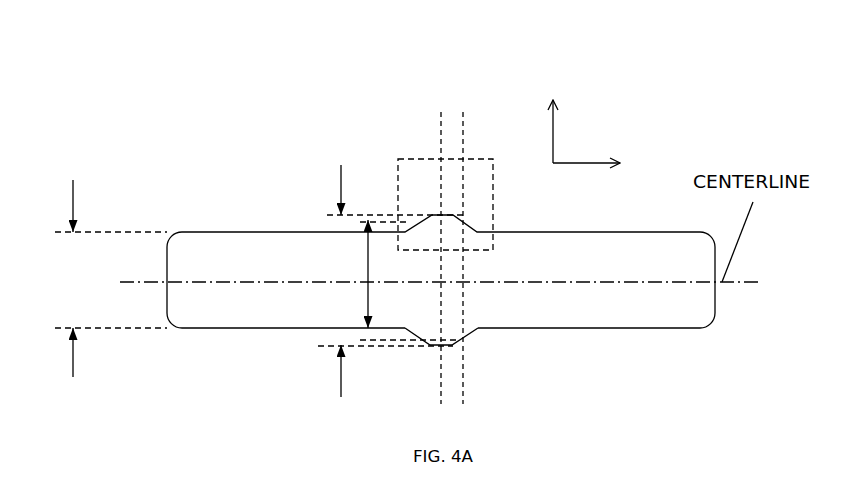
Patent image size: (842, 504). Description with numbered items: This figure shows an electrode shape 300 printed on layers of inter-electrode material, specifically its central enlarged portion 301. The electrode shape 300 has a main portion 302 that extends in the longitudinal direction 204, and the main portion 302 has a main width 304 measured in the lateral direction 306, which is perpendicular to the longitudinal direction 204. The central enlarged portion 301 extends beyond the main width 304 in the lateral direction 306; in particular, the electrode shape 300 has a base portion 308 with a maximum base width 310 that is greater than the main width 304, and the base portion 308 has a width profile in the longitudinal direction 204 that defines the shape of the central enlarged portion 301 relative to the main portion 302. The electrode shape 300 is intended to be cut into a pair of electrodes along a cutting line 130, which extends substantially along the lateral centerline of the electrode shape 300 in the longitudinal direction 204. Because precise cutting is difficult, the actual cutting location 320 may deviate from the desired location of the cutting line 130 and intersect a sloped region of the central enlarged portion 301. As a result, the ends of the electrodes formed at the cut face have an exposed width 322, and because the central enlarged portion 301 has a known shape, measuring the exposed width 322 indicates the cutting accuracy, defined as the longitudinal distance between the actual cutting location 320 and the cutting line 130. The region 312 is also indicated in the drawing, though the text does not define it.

The electrode shape 300 is at (277, 108).
The central enlarged portion 301 is at (417, 297).
The main portion 302 is at (238, 232).
The main width 304 is at (73, 190).
The lateral direction 306 is at (554, 120).
The longitudinal direction 204 is at (602, 160).
The base portion 308 is at (472, 335).
The maximum base width 310 is at (340, 195).
The contact region 312 is at (473, 160).
The actual cutting location 320 is at (462, 120).
The cutting line 130 is at (440, 142).
The exposed width 322 is at (367, 263).